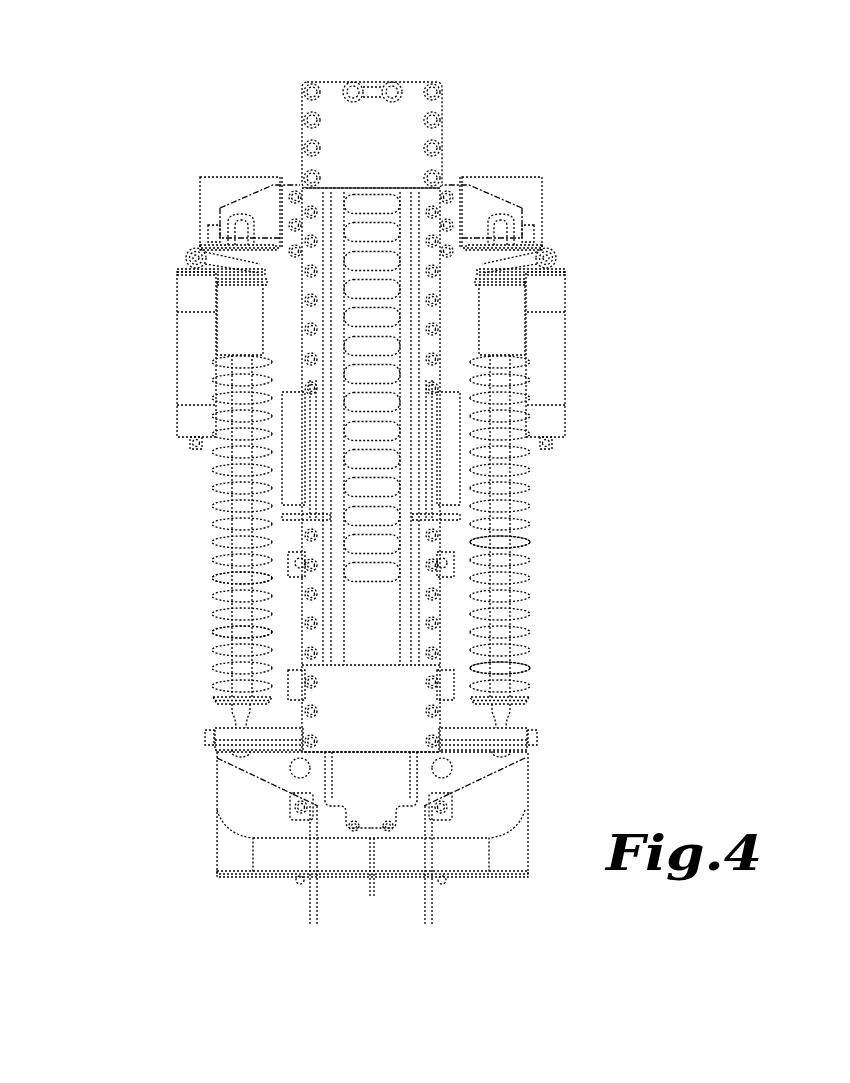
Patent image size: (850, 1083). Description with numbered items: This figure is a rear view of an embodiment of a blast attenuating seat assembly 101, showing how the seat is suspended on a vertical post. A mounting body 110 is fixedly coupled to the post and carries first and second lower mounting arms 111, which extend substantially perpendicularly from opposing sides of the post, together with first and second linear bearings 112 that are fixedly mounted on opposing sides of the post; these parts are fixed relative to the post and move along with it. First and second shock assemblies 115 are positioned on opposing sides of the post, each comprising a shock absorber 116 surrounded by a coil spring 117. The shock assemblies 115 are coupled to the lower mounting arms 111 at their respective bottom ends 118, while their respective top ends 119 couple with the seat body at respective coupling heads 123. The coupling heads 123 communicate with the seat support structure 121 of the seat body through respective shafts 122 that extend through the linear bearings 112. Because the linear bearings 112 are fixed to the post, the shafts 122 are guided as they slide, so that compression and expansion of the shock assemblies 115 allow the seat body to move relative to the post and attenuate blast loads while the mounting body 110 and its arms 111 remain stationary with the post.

The blast attenuating seat assembly 101 is at (620, 116).
The mounting body 110 is at (443, 108).
The lower mounting arms 111 is at (218, 762).
The linear bearings 112 is at (282, 462).
The shock assemblies 115 is at (193, 539).
The shock absorber 116 is at (213, 640).
The coil spring 117 is at (212, 588).
The bottom ends 118 is at (203, 728).
The top ends 119 is at (187, 240).
The seat support structure 121 is at (316, 854).
The shafts 122 is at (290, 288).
The coupling heads 123 is at (252, 190).